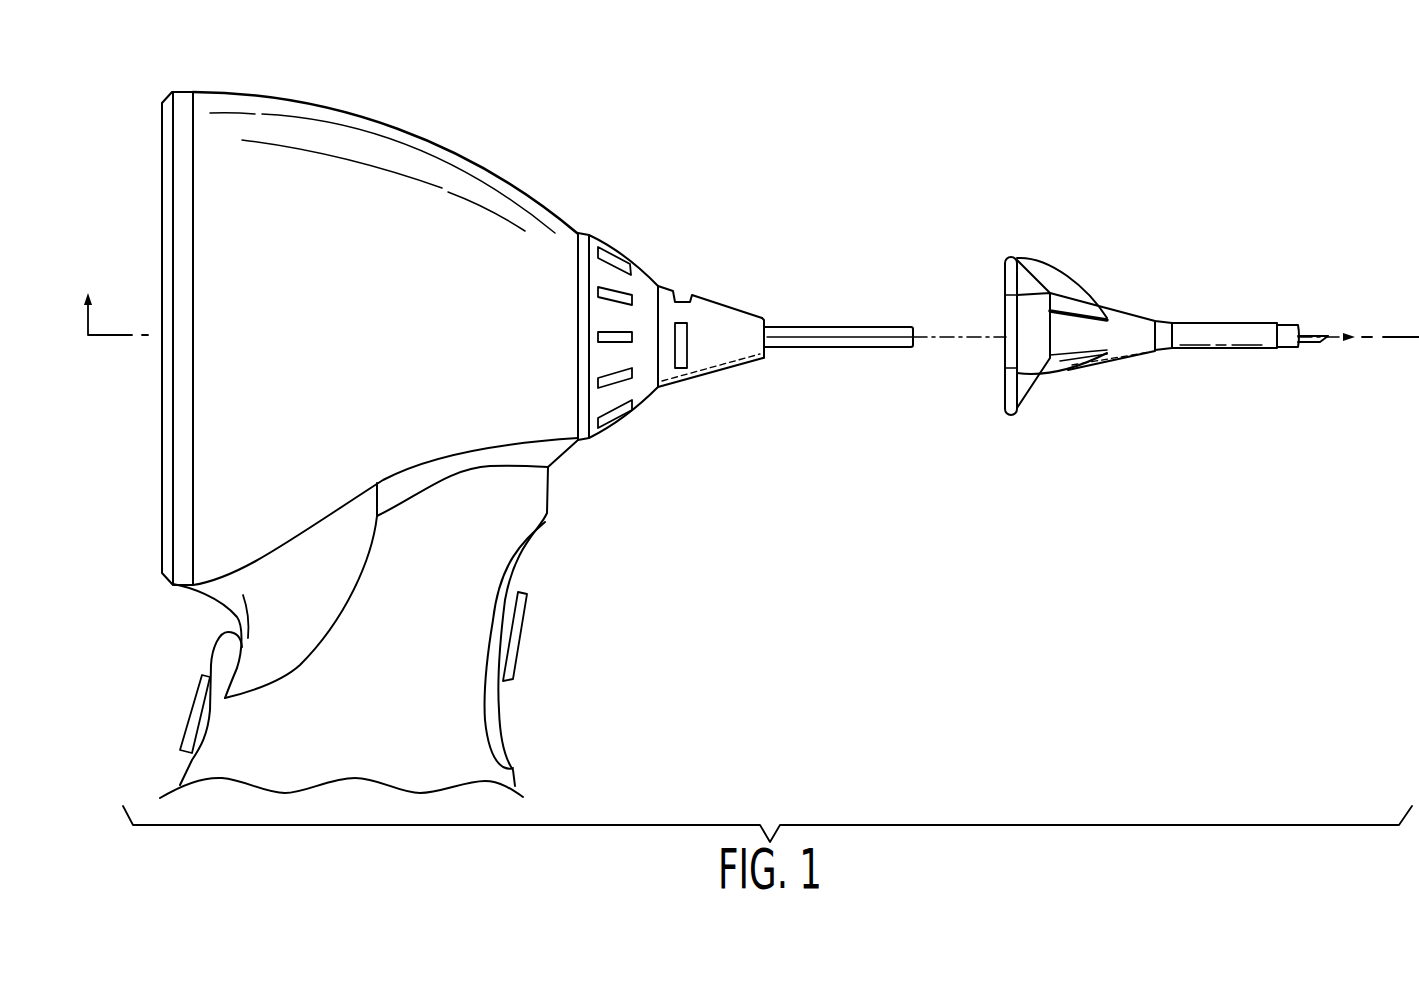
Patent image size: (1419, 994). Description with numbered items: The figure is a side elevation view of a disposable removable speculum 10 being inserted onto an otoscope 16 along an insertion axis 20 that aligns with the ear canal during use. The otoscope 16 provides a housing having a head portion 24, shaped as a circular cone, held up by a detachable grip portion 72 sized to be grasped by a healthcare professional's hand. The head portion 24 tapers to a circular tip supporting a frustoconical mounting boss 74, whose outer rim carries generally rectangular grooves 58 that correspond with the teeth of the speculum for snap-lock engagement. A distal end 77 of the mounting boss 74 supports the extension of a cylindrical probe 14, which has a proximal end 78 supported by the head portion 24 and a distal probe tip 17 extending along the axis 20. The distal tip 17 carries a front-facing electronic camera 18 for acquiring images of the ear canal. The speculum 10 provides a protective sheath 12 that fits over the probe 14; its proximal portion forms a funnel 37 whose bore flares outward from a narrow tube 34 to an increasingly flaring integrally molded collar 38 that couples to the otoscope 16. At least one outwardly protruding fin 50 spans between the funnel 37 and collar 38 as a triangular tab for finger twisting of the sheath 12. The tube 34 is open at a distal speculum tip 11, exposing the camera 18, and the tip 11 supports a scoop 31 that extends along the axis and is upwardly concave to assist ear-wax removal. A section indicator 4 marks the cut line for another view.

The otoscope 16 is at (148, 87).
The head portion 24 is at (413, 142).
The grip portion 72 is at (463, 727).
The grooves 58 is at (683, 295).
The frustoconical mounting boss 74 is at (742, 347).
The distal end 77 is at (762, 319).
The cylindrical probe 14 is at (835, 336).
The proximal end 78 is at (777, 339).
The electronic camera 18 is at (915, 335).
The distal probe tip 17 is at (910, 349).
The section line 4 is at (751, 313).
The removable speculum 10 is at (1183, 250).
The integrally molded collar 38 is at (1020, 282).
The funnel 37 is at (1085, 307).
The protective sheath 12 is at (1097, 370).
The outwardly protruding fin 50 is at (1048, 275).
The tube 34 is at (1203, 333).
The distal speculum tip 11 is at (1293, 346).
The insertion axis 20 is at (1323, 335).
The scoop 31 is at (1316, 345).